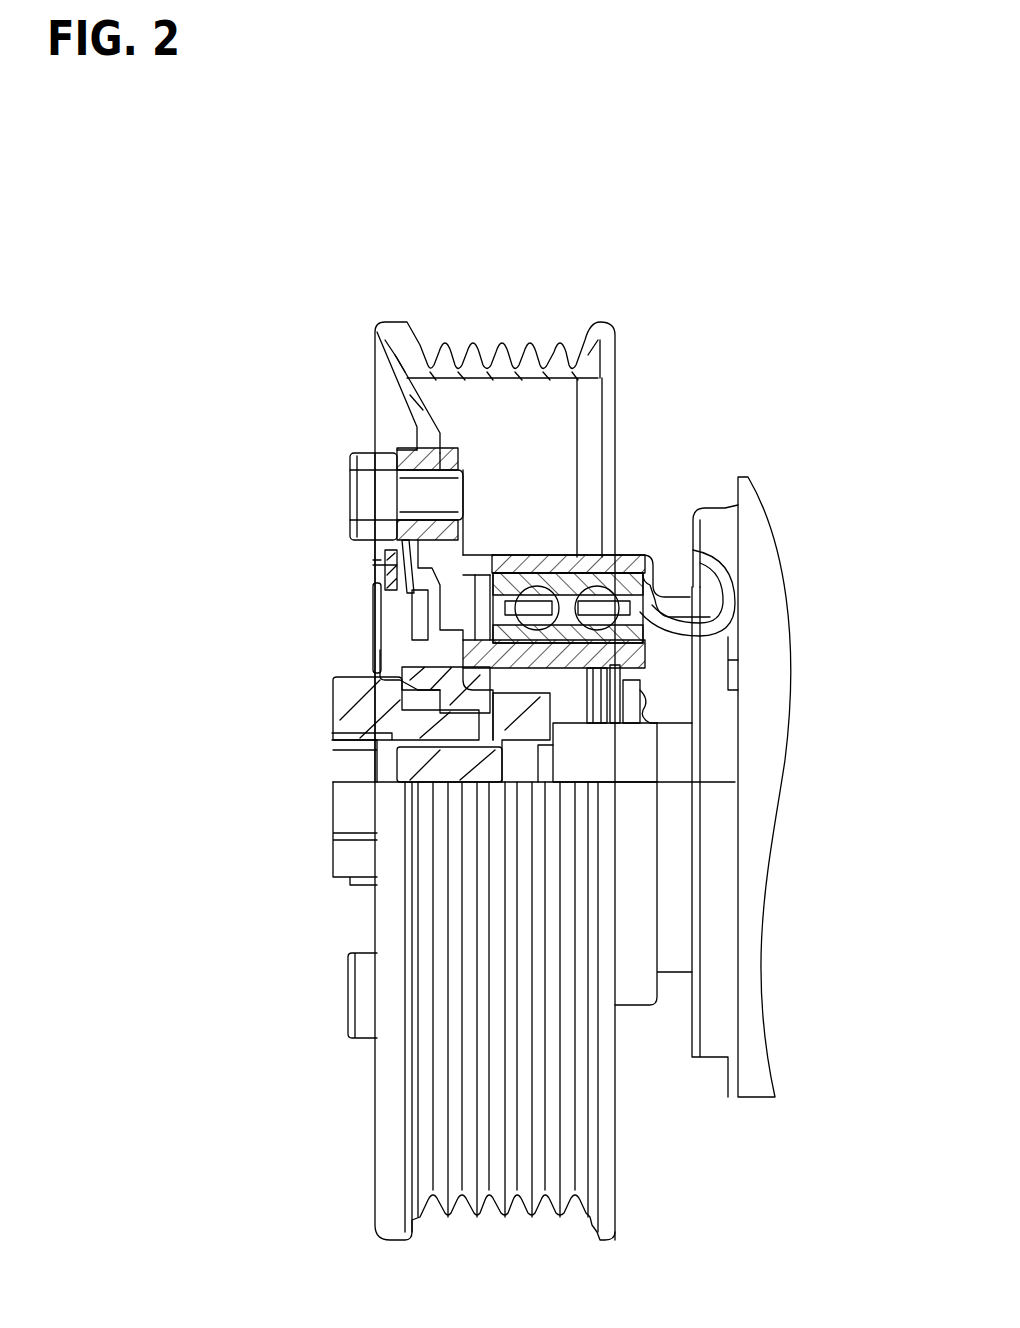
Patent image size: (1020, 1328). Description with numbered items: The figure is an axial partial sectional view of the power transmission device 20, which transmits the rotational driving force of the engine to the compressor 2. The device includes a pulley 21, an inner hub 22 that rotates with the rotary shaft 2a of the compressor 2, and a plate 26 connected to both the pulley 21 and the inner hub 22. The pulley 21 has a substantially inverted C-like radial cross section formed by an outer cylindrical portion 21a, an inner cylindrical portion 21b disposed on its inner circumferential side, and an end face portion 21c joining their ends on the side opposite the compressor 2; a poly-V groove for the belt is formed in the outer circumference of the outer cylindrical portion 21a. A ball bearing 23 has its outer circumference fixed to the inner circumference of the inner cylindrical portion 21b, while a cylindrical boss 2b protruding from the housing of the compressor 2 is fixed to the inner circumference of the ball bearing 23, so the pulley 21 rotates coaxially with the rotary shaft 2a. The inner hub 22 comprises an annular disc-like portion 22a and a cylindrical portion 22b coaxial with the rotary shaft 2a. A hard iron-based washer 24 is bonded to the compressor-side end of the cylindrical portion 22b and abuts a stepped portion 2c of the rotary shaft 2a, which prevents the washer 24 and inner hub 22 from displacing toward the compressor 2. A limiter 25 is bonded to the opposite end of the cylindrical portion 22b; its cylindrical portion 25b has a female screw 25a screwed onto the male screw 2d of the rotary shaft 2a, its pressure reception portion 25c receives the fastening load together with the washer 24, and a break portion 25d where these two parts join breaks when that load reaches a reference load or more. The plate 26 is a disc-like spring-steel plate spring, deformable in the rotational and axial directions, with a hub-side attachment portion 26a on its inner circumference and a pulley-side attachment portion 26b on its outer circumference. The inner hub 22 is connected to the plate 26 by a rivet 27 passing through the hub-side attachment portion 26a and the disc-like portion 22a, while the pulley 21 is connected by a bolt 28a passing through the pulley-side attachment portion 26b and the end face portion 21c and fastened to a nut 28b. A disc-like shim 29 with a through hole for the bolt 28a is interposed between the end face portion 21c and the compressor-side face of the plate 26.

The compressor 2 is at (720, 993).
The rotary shaft 2a is at (470, 775).
The cylindrical boss 2b is at (643, 647).
The stepped portion 2c is at (535, 768).
The male screw 2d is at (553, 735).
The power transmission device 20 is at (645, 298).
The pulley 21 is at (588, 353).
The outer cylindrical portion 21a is at (513, 357).
The inner cylindrical portion 21b is at (512, 560).
The end face portion 21c is at (376, 392).
The inner hub 22 is at (375, 565).
The disc-like portion 22a is at (375, 547).
The cylindrical portion 22b is at (372, 630).
The ball bearing 23 is at (625, 578).
The washer 24 is at (517, 693).
The limiter 25 is at (165, 795).
The female screw 25a is at (485, 708).
The cylindrical portion 25b is at (425, 700).
The pressure reception portion 25c is at (395, 718).
The break portion 25d is at (335, 678).
The plate 26 is at (380, 548).
The hub-side attachment portion 26a is at (380, 612).
The pulley-side attachment portion 26b is at (355, 520).
The rivet 27 is at (400, 592).
The bolt 28a is at (350, 483).
The nut 28b is at (462, 458).
The shim 29 is at (408, 445).